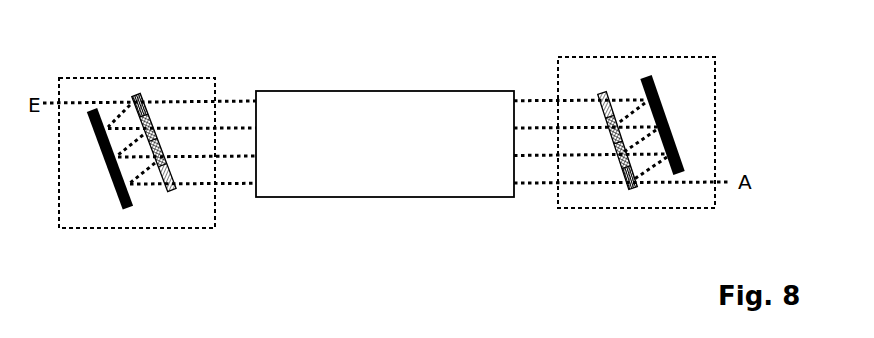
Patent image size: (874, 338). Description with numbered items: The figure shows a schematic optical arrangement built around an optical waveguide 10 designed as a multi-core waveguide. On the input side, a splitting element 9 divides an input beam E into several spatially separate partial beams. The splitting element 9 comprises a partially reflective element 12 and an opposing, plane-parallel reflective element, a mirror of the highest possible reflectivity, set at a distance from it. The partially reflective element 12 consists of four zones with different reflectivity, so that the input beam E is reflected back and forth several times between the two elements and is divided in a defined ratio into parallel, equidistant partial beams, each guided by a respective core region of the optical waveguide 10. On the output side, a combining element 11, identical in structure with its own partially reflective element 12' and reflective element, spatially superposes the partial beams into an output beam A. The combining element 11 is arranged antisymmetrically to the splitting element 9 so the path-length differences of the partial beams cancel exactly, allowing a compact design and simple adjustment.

The splitting element 9 is at (138, 78).
The optical waveguide 10 is at (385, 91).
The combining element 11 is at (627, 57).
The partially reflective element 12 is at (201, 169).
The partially reflective element 12' is at (605, 172).